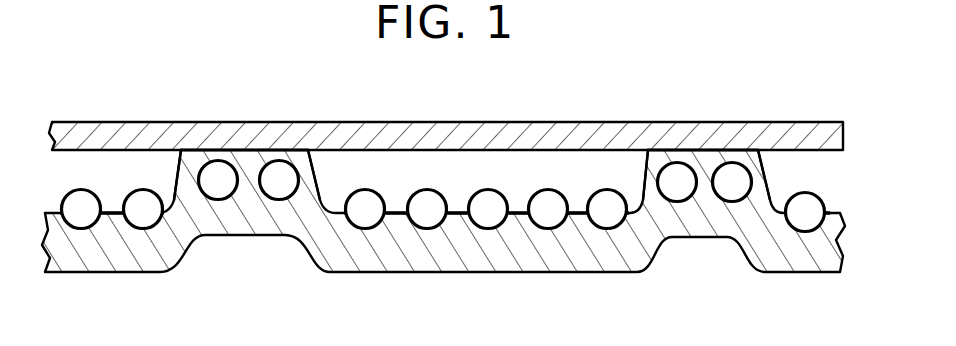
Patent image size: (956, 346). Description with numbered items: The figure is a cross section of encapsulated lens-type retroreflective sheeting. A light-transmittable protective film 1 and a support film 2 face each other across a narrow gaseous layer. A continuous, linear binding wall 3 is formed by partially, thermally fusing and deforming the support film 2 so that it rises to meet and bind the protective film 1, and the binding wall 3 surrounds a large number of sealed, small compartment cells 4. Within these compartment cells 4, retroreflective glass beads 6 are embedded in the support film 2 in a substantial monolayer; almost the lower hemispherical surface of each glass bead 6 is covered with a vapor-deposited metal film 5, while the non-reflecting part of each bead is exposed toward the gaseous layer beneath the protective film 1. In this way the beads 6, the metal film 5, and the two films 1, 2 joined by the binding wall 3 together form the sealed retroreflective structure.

The light-transmittable protective film 1 is at (748, 128).
The support film 2 is at (625, 258).
The binding wall 3 is at (248, 162).
The compartment cell 4 is at (523, 165).
The vapor-deposited metal film 5 is at (427, 230).
The retroreflective glass bead 6 is at (363, 215).